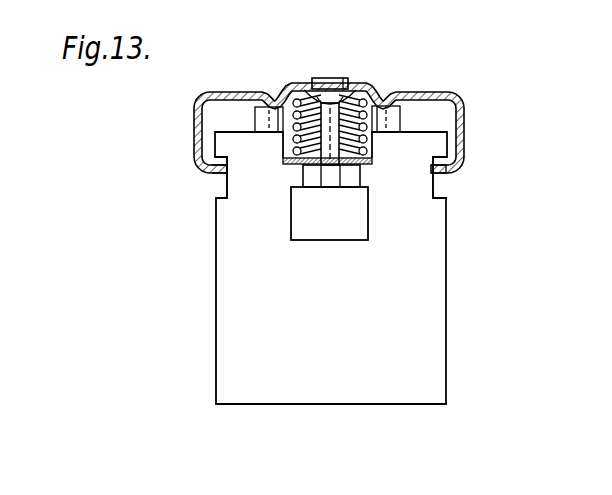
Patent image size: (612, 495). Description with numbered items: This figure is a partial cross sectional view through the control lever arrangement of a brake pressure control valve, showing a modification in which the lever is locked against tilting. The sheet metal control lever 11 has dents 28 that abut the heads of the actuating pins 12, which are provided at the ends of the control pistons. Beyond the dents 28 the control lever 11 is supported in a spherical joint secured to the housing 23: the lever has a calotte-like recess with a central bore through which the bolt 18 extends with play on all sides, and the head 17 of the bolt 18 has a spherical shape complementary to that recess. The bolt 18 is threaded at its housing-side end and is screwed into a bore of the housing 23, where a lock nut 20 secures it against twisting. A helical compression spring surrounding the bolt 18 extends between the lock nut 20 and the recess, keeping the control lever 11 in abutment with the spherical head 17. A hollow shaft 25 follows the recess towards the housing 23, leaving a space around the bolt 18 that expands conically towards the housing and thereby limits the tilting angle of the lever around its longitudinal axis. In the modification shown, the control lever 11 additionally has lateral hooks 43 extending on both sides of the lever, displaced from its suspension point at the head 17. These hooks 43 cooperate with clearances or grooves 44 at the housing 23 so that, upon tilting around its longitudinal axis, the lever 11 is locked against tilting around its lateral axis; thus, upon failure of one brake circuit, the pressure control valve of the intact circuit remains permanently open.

The control lever 11 is at (216, 91).
The actuating pins 12 is at (261, 120).
The head of bolt 17 is at (326, 96).
The bolt 18 is at (302, 178).
The lock nut 20 is at (366, 184).
The housing 23 is at (358, 307).
The hollow shaft 25 is at (364, 159).
The dents 28 is at (274, 100).
The lateral hooks 43 is at (200, 171).
The grooves 44 is at (219, 188).